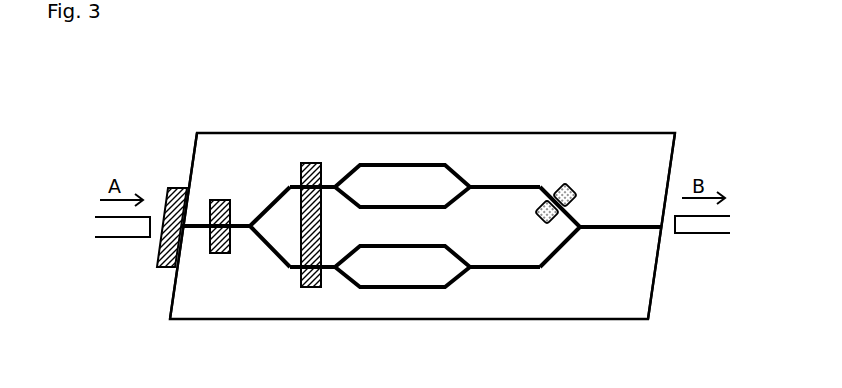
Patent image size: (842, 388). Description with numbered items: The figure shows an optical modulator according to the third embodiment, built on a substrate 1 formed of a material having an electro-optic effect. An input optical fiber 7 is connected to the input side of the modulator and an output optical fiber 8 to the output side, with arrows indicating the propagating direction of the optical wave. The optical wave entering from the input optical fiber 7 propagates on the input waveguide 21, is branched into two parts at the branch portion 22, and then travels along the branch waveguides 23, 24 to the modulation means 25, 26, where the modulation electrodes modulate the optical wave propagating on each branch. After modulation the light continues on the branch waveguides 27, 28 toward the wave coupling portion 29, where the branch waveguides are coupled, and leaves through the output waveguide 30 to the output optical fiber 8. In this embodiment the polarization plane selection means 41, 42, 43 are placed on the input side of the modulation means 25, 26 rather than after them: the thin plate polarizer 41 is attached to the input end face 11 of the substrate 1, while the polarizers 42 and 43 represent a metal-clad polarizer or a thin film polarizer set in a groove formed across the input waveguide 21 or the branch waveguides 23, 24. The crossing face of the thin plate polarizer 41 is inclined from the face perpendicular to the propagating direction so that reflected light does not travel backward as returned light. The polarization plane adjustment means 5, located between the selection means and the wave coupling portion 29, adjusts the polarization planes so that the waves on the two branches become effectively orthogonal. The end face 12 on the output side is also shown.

The substrate 1 is at (535, 160).
The input end face 11 is at (192, 167).
The output end face 12 is at (672, 152).
The input optical fiber 7 is at (125, 227).
The output optical fiber 8 is at (702, 225).
The input waveguide 21 is at (200, 218).
The branch portion 22 is at (250, 220).
The branch waveguide 23 is at (332, 187).
The branch waveguide 24 is at (327, 267).
The modulation means 25 is at (413, 150).
The modulation means 26 is at (423, 303).
The branch waveguide 27 is at (495, 186).
The branch waveguide 28 is at (490, 267).
The wave coupling portion 29 is at (580, 229).
The output waveguide 30 is at (622, 228).
The thin plate polarizer 41 is at (165, 269).
The polarization plane selection means 42 is at (217, 254).
The polarization plane selection means 43 is at (310, 288).
The polarization plane adjustment means 5 is at (572, 185).